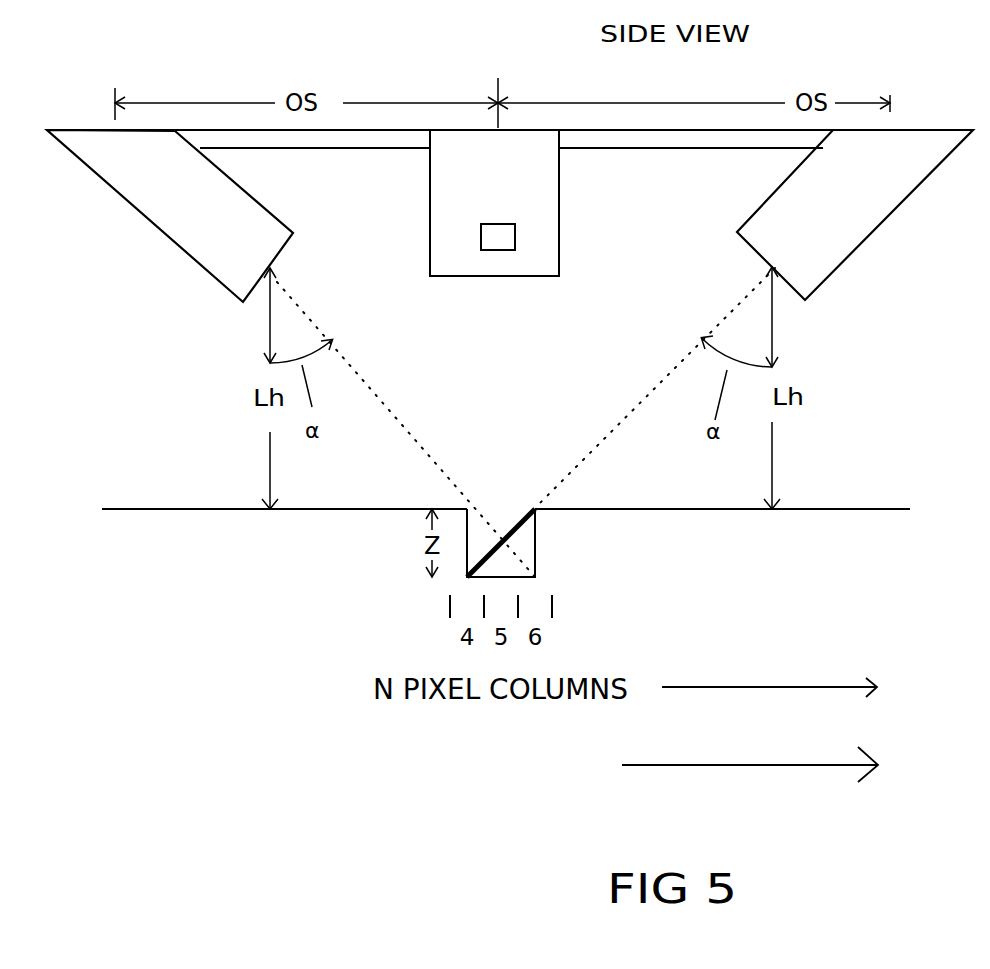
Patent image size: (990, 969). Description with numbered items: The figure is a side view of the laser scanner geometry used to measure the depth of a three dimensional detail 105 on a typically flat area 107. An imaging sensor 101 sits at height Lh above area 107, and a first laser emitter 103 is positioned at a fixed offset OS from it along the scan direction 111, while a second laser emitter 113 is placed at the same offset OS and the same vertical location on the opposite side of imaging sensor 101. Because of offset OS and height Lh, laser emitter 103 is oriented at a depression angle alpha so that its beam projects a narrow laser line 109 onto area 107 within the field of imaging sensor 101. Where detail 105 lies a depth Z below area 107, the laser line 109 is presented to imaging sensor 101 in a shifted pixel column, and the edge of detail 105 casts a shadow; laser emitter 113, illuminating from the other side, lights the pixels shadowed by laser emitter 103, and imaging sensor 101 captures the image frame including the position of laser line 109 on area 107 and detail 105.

The imaging sensor 101 is at (494, 203).
The first laser emitter 103 is at (855, 215).
The three dimensional detail 105 is at (552, 558).
The flat area 107 is at (513, 529).
The first laser line 109 is at (537, 500).
The scan direction 111 is at (780, 785).
The second laser emitter 113 is at (170, 216).